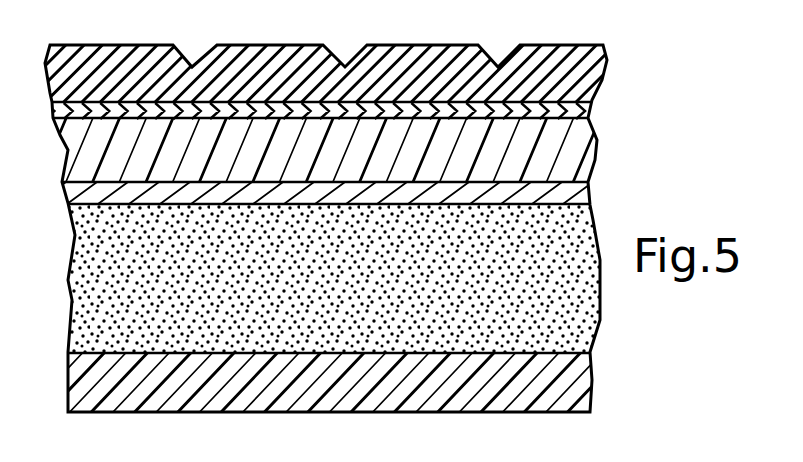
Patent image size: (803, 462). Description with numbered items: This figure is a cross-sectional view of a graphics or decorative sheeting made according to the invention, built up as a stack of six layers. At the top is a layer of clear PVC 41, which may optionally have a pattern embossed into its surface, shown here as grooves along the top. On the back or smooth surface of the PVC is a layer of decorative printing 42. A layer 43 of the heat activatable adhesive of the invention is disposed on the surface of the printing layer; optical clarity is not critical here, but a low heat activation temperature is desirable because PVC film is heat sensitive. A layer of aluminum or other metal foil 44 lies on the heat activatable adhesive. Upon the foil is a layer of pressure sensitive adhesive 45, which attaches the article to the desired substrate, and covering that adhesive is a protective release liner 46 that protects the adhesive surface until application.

The layer of clear PVC 41 is at (594, 66).
The layer of decorative printing 42 is at (588, 110).
The layer of heat activatable adhesive 43 is at (580, 142).
The layer of aluminum or other metal foil 44 is at (568, 197).
The layer of pressure sensitive adhesive 45 is at (585, 315).
The protective release liner 46 is at (575, 395).